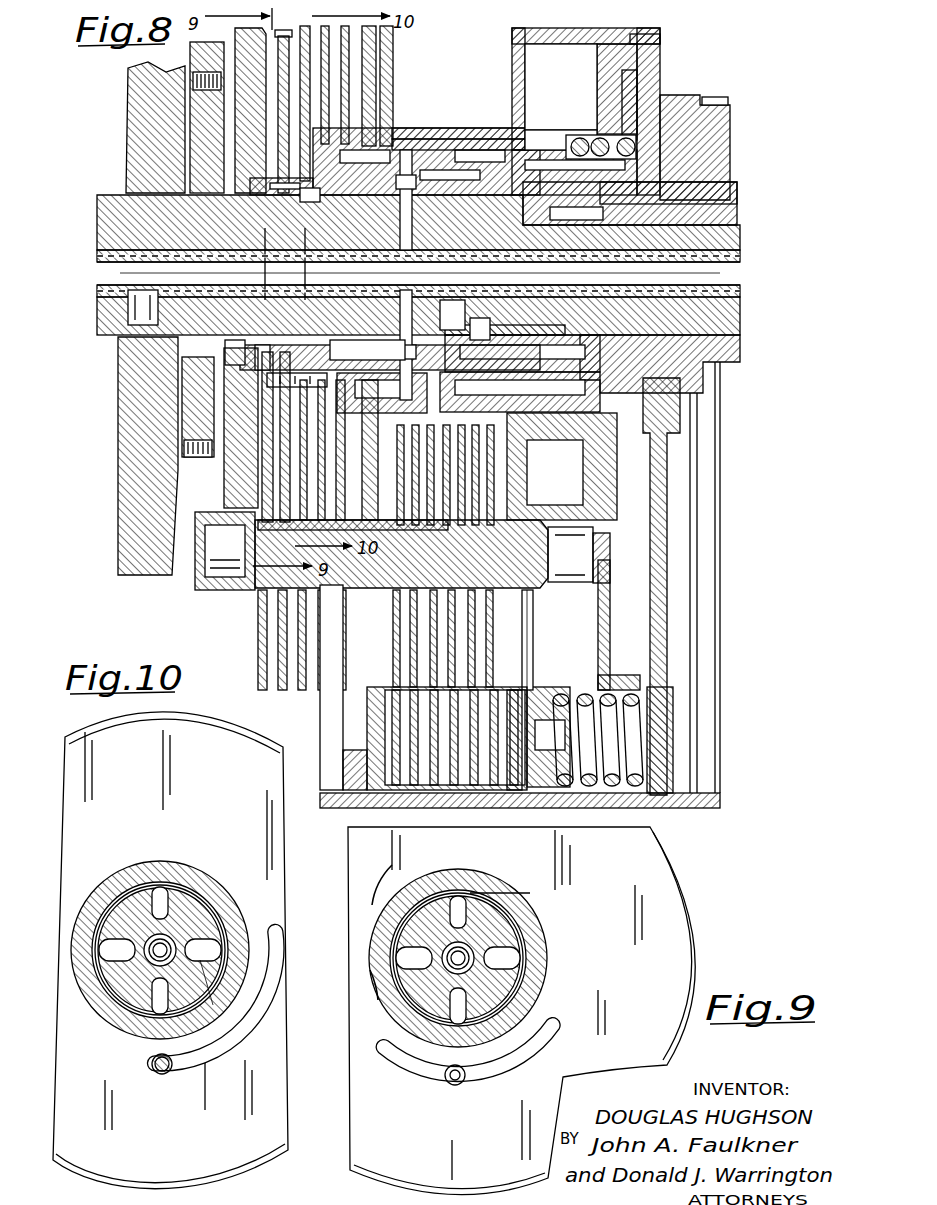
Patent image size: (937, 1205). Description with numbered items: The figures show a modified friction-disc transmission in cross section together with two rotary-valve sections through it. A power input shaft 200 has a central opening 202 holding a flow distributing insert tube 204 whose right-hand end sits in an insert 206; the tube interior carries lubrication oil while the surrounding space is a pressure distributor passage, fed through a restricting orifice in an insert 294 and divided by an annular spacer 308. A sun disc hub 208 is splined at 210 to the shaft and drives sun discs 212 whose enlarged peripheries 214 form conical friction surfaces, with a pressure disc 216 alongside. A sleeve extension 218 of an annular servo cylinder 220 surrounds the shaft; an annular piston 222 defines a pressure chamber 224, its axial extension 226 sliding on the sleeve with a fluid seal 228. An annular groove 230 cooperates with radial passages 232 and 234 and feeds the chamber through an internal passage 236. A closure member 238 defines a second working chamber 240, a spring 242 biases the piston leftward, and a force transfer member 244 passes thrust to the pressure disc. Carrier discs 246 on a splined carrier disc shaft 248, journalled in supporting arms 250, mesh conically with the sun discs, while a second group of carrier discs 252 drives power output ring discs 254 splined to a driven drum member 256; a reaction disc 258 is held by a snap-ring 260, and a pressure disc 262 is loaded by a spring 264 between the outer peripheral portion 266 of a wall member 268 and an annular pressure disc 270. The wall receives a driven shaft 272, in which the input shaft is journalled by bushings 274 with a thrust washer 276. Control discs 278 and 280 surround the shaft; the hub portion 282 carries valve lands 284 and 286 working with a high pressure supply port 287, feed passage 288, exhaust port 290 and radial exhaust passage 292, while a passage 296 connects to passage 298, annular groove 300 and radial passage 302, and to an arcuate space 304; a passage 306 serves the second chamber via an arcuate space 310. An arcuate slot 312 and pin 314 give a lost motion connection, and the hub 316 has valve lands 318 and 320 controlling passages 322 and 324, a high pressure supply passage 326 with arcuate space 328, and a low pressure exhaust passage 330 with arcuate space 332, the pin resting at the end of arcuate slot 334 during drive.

In FIG. 8, the power input shaft 200 is at (122, 331).
In FIG. 8, the central opening 202 is at (240, 288).
In FIG. 8, the flow distributing insert tube 204 is at (276, 334).
In FIG. 8, the insert 206 is at (737, 309).
In FIG. 8, the sun disc hub 208 is at (395, 128).
In FIG. 8, the spline 210 is at (305, 202).
In FIG. 8, the sun discs 212 is at (362, 53).
In FIG. 8, the enlarged periphery 214 is at (368, 44).
In FIG. 8, the pressure disc 216 is at (326, 72).
In FIG. 8, the sleeve extension 218 is at (532, 215).
In FIG. 8, the annular servo cylinder 220 is at (652, 68).
In FIG. 8, the annular piston 222 is at (653, 55).
In FIG. 8, the pressure chamber 224 is at (632, 88).
In FIG. 8, the axial extension 226 is at (477, 127).
In FIG. 8, the fluid seal 228 is at (423, 200).
In FIG. 8, the annular groove 230 is at (423, 345).
In FIG. 8, the radial passage 232 is at (392, 355).
In FIG. 8, the radial passage 234 is at (395, 305).
In FIG. 8, the internal passage 236 is at (552, 128).
In FIG. 8, the closure member 238 is at (522, 55).
In FIG. 8, the second working chamber 240 is at (522, 68).
In FIG. 8, the spring 242 is at (637, 147).
In FIG. 8, the force transfer member 244 is at (486, 127).
In FIG. 8, the carrier discs 246 is at (253, 622).
In FIG. 8, the carrier disc shaft 248 is at (401, 554).
In FIG. 8, the supporting arms 250 is at (369, 640).
In FIG. 8, the carrier discs 252 is at (492, 632).
In FIG. 8, the power output ring discs 254 is at (425, 725).
In FIG. 8, the driven drum member 256 is at (673, 817).
In FIG. 8, the reaction disc 258 is at (378, 697).
In FIG. 8, the snap-ring 260 is at (343, 772).
In FIG. 8, the pressure disc 262 is at (510, 683).
In FIG. 8, the spring 264 is at (633, 732).
In FIG. 8, the outer peripheral portion 266 is at (662, 690).
In FIG. 8, the wall member 268 is at (667, 600).
In FIG. 8, the annular pressure disc 270 is at (550, 687).
In FIG. 8, the driven shaft 272 is at (723, 372).
In FIG. 8, the bushings 274 is at (507, 320).
In FIG. 8, the thrust washer 276 is at (612, 210).
In FIG. 8, the control disc 278 is at (292, 460).
In FIG. 9, the control disc 278 is at (680, 948).
In FIG. 8, the control disc 280 is at (297, 493).
In FIG. 10, the control disc 280 is at (224, 779).
In FIG. 8, the hub portion 282 is at (212, 134).
In FIG. 9, the hub portion 282 is at (543, 930).
In FIG. 9, the valve land 284 is at (467, 892).
In FIG. 9, the valve land 286 is at (500, 1003).
In FIG. 9, the high pressure supply port 287 is at (516, 892).
In FIG. 9, the feed passage 288 is at (470, 893).
In FIG. 9, the exhaust port 290 is at (402, 1003).
In FIG. 9, the radial exhaust passage 292 is at (455, 1030).
In FIG. 8, the insert 294 is at (140, 356).
In FIG. 9, the passage 296 is at (508, 960).
In FIG. 8, the passage 298 is at (480, 312).
In FIG. 8, the annular groove 300 is at (494, 328).
In FIG. 8, the radial passage 302 is at (522, 353).
In FIG. 9, the arcuate space 304 is at (530, 982).
In FIG. 9, the passage 306 is at (372, 980).
In FIG. 8, the annular spacer 308 is at (345, 245).
In FIG. 9, the arcuate space 310 is at (390, 917).
In FIG. 9, the arcuate slot 312 is at (472, 1078).
In FIG. 10, the pin 314 is at (152, 1068).
In FIG. 9, the pin 314 is at (450, 1083).
In FIG. 8, the hub 316 is at (265, 127).
In FIG. 10, the hub 316 is at (183, 887).
In FIG. 10, the valve land 318 is at (240, 905).
In FIG. 10, the valve land 320 is at (95, 887).
In FIG. 10, the passage 322 is at (200, 962).
In FIG. 10, the passage 324 is at (112, 1013).
In FIG. 10, the high pressure supply passage 326 is at (167, 887).
In FIG. 10, the arcuate space 328 is at (140, 872).
In FIG. 10, the low pressure exhaust passage 330 is at (150, 1008).
In FIG. 10, the arcuate space 332 is at (172, 1060).
In FIG. 10, the arcuate slot 334 is at (267, 1012).